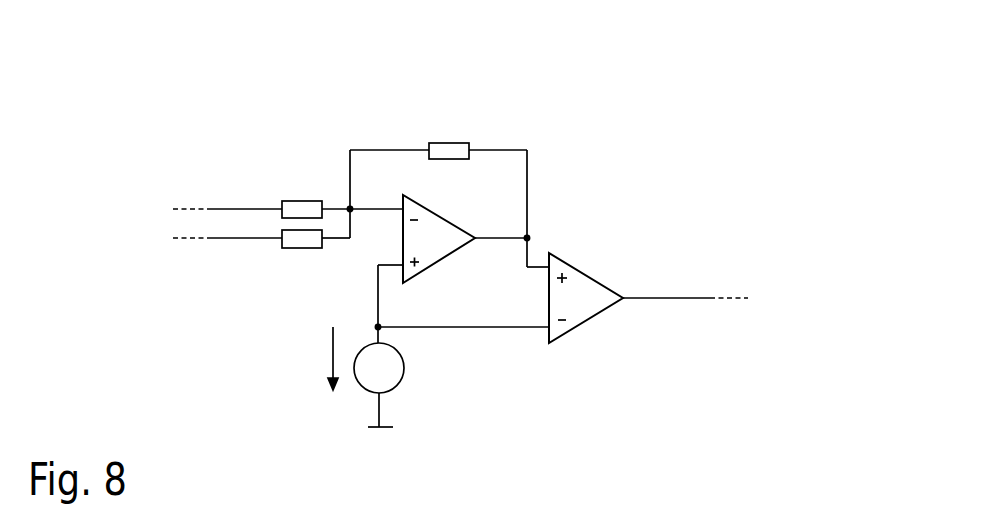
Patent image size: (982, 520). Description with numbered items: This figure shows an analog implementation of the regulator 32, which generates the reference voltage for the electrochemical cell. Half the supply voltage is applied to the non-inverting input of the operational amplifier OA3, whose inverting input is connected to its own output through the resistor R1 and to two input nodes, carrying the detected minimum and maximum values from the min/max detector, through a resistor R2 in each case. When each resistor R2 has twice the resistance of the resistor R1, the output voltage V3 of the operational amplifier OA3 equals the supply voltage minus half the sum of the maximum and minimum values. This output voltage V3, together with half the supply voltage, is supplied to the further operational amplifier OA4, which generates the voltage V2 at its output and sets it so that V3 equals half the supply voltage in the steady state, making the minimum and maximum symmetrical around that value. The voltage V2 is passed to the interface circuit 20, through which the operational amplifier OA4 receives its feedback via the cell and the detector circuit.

The regulator 32 is at (583, 92).
The interface circuit 20 is at (801, 300).
The resistor R1 is at (449, 138).
The resistors R2 is at (302, 228).
The operational amplifier OA3 is at (439, 244).
The further operational amplifier OA4 is at (586, 304).
The output voltage V2 is at (666, 286).
The output voltage V3 is at (527, 238).